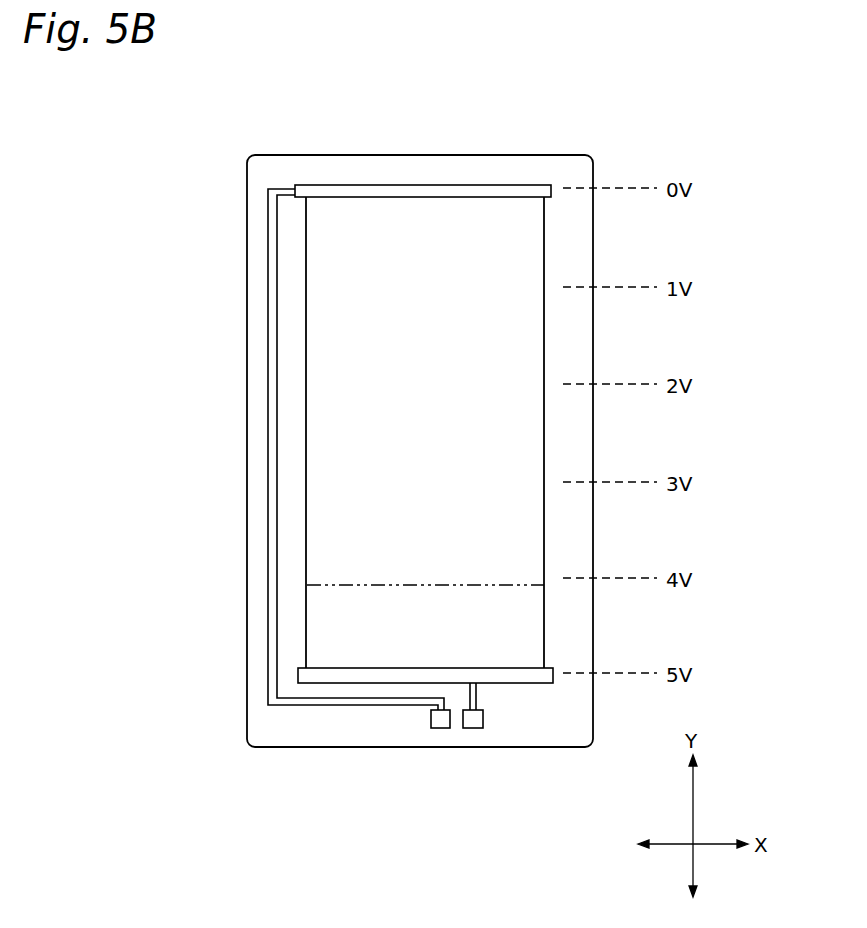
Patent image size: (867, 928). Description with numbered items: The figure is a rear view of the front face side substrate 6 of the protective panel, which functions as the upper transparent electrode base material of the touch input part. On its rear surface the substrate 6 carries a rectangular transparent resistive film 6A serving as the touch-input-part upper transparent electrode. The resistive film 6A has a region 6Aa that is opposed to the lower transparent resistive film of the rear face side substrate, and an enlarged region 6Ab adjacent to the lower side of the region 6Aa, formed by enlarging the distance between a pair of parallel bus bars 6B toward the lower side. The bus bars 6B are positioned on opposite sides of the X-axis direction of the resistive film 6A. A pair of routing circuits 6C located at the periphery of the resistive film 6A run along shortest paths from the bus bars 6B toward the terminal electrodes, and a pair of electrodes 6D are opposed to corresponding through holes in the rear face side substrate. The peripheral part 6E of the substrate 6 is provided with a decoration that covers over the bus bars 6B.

The front face side substrate 6 is at (627, 153).
The resistive film 6A is at (346, 432).
The region 6Aa is at (326, 557).
The enlarged region 6Ab is at (337, 634).
The bus bars 6B is at (490, 190).
The routing circuits 6C is at (268, 282).
The electrodes 6D is at (472, 729).
The peripheral part 6E is at (572, 446).